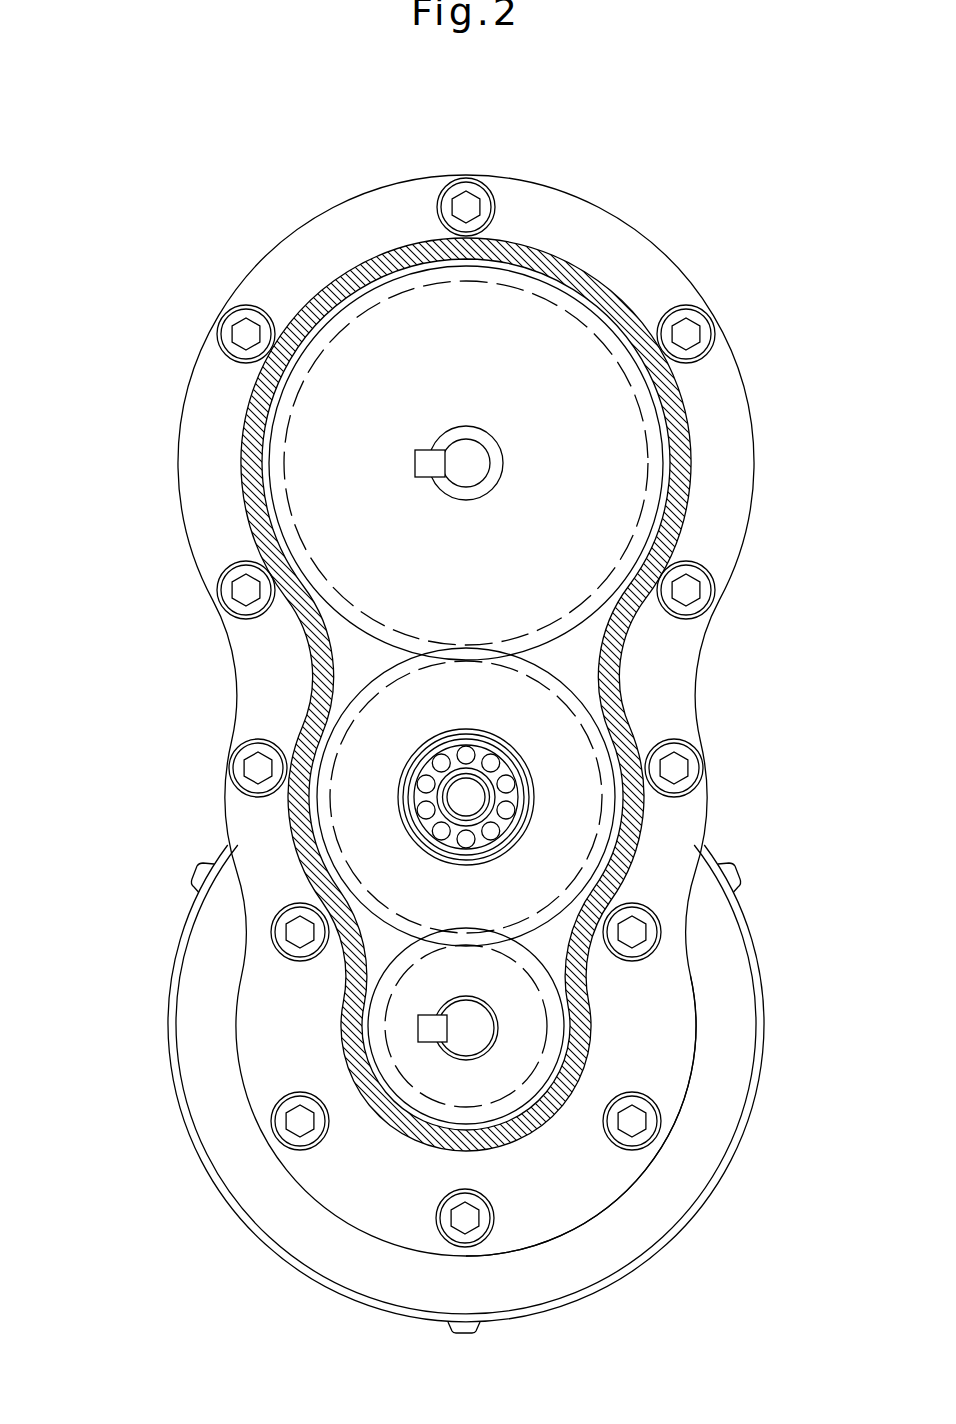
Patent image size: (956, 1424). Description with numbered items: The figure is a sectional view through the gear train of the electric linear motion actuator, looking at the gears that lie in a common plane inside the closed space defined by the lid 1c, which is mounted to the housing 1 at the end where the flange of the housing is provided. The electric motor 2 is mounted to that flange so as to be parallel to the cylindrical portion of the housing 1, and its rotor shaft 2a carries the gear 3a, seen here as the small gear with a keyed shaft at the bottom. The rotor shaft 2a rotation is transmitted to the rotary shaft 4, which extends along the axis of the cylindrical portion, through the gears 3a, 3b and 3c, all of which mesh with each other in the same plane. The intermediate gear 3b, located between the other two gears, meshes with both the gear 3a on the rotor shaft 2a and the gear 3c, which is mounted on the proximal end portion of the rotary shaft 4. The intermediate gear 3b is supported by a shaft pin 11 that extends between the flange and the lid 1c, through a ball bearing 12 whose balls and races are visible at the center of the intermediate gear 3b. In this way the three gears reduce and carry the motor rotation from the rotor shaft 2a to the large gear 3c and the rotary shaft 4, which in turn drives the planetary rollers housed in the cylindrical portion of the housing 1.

The housing 1 is at (318, 211).
The lid 1c is at (640, 1045).
The electric motor 2 is at (292, 1218).
The rotor shaft 2a is at (463, 1042).
The gear 3a is at (380, 1010).
The intermediate gear 3b is at (343, 720).
The gear 3c is at (293, 413).
The rotary shaft 4 is at (462, 447).
The shaft pin 11 is at (460, 795).
The ball bearing 12 is at (420, 830).